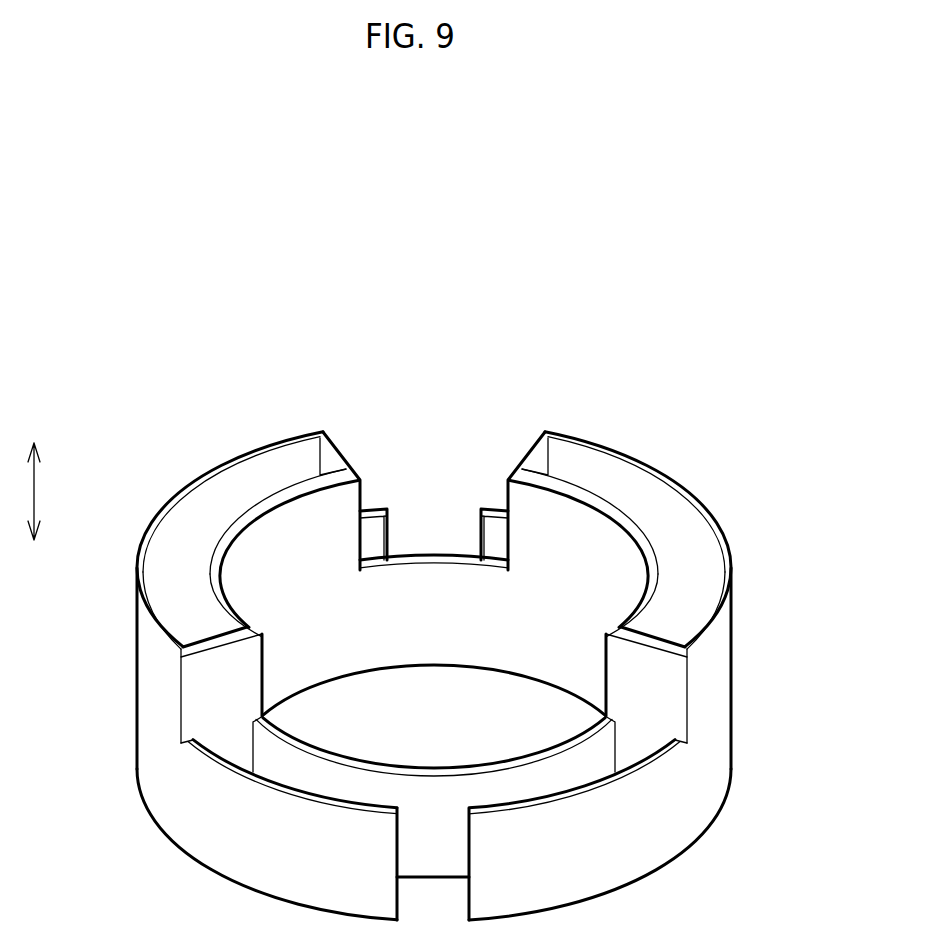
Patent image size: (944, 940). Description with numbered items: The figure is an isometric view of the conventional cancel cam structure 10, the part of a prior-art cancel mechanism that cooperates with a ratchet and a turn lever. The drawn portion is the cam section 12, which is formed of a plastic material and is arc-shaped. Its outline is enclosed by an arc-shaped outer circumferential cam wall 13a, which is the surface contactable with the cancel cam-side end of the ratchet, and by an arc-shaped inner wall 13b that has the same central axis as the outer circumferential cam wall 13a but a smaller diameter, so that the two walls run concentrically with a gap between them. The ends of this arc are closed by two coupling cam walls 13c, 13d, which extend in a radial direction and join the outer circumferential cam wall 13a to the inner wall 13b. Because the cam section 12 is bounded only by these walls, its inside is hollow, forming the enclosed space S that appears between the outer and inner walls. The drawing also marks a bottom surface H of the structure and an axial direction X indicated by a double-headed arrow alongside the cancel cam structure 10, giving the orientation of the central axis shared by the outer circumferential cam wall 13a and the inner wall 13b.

The cancel cam structure 10 is at (491, 332).
The cam section 12 is at (192, 425).
The outer circumferential cam wall 13a is at (155, 670).
The inner wall 13b is at (283, 556).
The coupling cam wall 13c is at (342, 452).
The coupling cam wall 13d is at (215, 672).
The enclosed space S is at (212, 541).
The bottom surface H is at (446, 736).
The axial direction X is at (47, 491).